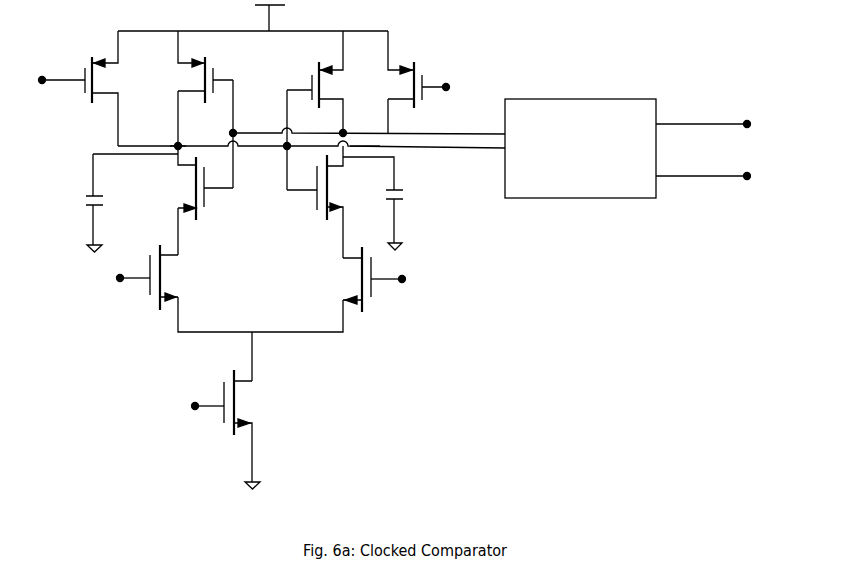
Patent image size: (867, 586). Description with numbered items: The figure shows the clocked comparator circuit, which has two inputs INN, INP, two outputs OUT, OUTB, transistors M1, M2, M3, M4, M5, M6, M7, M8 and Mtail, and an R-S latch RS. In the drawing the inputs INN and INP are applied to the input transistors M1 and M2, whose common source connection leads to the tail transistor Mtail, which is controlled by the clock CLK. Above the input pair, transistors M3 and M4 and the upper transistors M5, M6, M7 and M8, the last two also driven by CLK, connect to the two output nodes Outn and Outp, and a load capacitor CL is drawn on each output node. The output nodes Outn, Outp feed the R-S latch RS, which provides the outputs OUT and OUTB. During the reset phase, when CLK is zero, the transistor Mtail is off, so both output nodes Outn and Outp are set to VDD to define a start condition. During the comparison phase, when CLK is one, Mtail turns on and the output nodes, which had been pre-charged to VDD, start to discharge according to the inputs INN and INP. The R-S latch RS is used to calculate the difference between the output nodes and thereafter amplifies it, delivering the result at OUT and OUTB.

The transistor M1 is at (172, 277).
The transistor M2 is at (353, 279).
The transistor M3 is at (201, 200).
The transistor M4 is at (321, 202).
The transistor M5 is at (205, 88).
The transistor M6 is at (320, 82).
The transistor M7 is at (105, 88).
The transistor M8 is at (414, 82).
The Mtail transistor Mtail is at (250, 429).
The load capacitor CL is at (243, 203).
The clock signal CLK is at (240, 237).
The input INN is at (121, 277).
The input INP is at (399, 278).
The output node Outn is at (165, 135).
The output node Outp is at (363, 145).
The output OUT is at (718, 132).
The output OUTB is at (722, 185).
The R-S latch RS is at (580, 148).